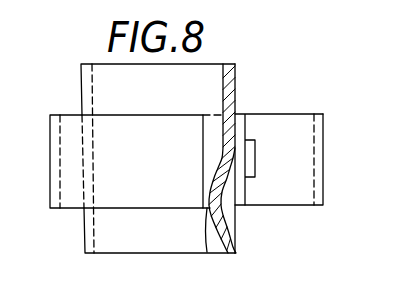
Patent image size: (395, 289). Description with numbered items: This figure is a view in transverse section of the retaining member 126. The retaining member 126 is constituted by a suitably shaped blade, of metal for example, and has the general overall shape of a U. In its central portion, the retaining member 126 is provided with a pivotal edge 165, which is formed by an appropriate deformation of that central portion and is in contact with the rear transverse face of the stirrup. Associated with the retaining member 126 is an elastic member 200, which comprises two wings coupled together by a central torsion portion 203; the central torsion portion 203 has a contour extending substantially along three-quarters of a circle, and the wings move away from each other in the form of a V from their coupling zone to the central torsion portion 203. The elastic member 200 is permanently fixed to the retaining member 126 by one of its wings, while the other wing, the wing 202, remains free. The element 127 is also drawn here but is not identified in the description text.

The elastic member 200 is at (315, 207).
The wing 202 is at (68, 128).
The central torsion portion 203 is at (290, 125).
The housing body 127 is at (114, 229).
The retaining member 126 is at (236, 228).
The pivotal edge 165 is at (207, 252).